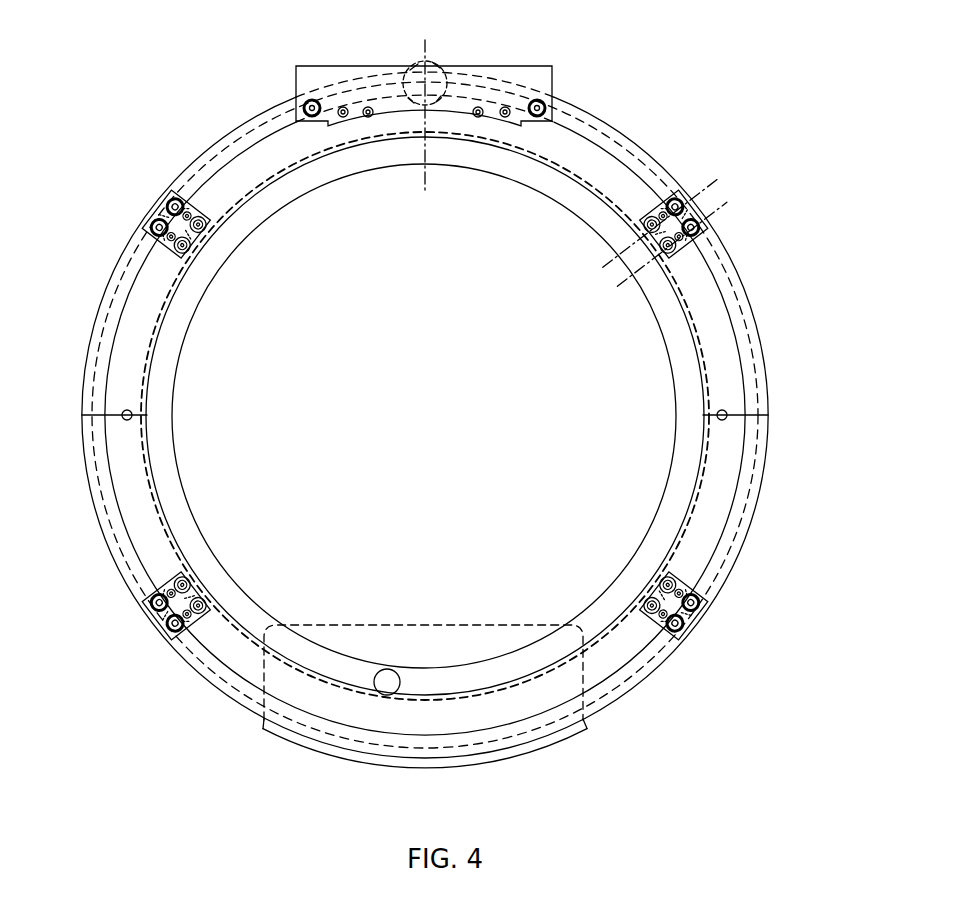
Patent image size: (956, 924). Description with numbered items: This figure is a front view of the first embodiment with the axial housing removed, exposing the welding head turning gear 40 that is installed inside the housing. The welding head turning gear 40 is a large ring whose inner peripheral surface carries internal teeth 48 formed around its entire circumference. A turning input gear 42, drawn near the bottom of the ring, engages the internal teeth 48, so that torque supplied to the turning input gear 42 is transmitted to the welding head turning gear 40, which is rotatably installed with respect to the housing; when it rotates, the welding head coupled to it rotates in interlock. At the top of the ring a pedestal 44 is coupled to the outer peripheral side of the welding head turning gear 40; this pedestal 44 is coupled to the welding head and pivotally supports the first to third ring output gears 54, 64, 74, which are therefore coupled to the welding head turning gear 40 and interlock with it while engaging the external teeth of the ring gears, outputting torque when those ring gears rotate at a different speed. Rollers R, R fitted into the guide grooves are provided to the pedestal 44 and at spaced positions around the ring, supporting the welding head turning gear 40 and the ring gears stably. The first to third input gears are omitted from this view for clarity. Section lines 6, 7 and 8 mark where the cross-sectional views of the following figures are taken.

The welding head turning gear 40 is at (721, 492).
The turning input gear 42 is at (390, 670).
The pedestal 44 is at (553, 89).
The internal teeth 48 is at (697, 338).
The first ring output gear 54 is at (475, 56).
The second ring output gear 64 is at (475, 56).
The third ring output gear 74 is at (433, 66).
The roller R is at (153, 207).
The section line 6- 6 is at (425, 45).
The section line 7- 7 is at (645, 203).
The section line 8- 8 is at (667, 240).